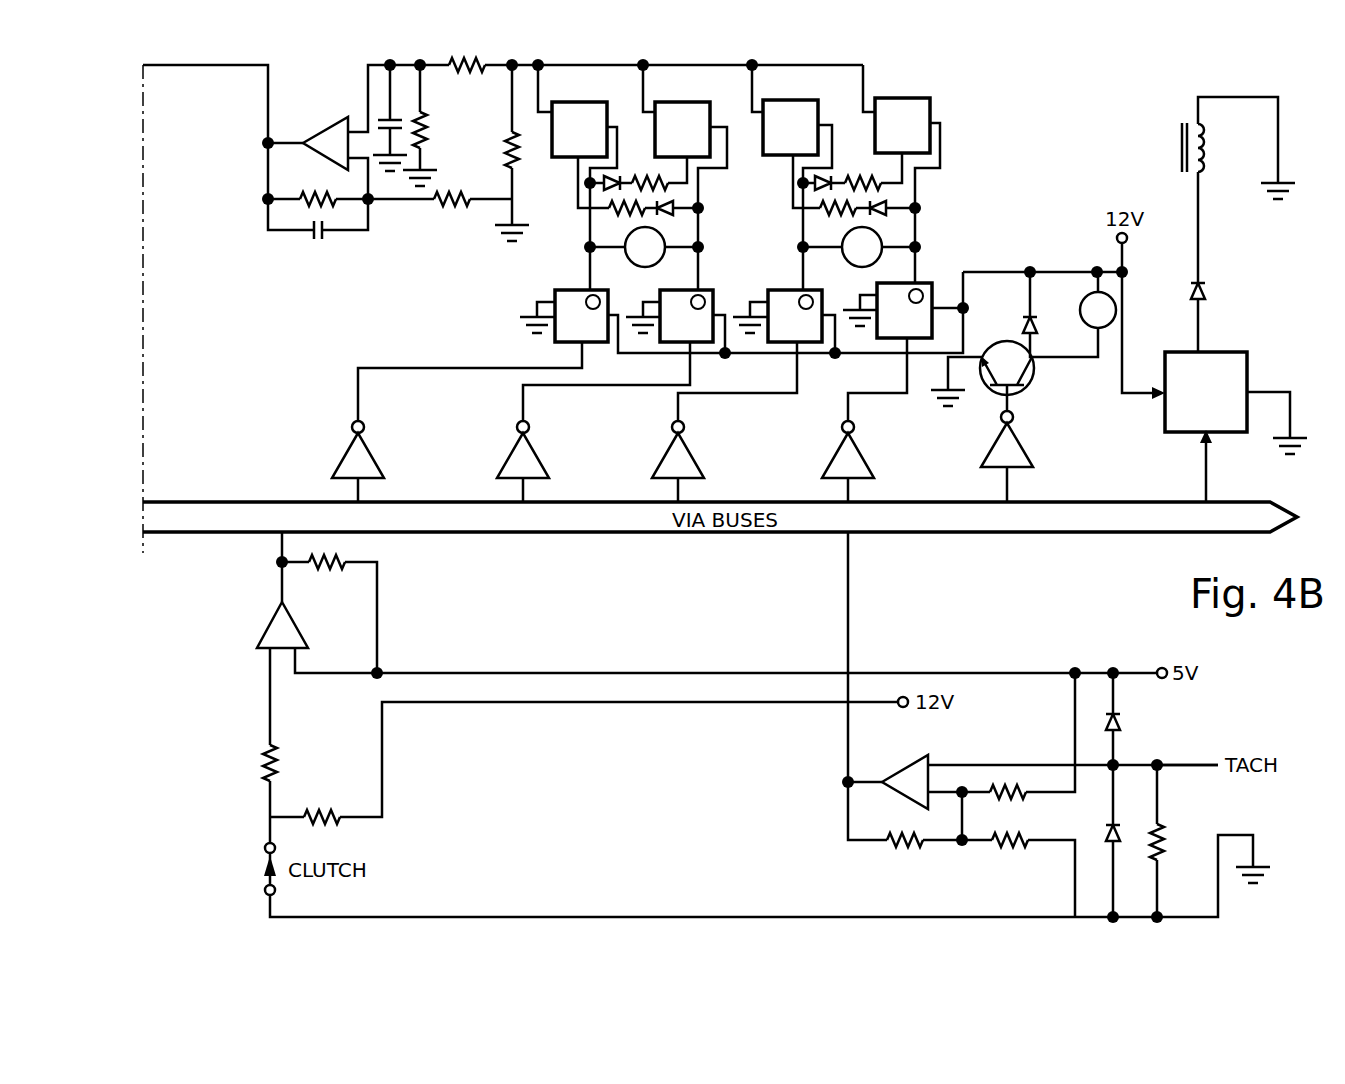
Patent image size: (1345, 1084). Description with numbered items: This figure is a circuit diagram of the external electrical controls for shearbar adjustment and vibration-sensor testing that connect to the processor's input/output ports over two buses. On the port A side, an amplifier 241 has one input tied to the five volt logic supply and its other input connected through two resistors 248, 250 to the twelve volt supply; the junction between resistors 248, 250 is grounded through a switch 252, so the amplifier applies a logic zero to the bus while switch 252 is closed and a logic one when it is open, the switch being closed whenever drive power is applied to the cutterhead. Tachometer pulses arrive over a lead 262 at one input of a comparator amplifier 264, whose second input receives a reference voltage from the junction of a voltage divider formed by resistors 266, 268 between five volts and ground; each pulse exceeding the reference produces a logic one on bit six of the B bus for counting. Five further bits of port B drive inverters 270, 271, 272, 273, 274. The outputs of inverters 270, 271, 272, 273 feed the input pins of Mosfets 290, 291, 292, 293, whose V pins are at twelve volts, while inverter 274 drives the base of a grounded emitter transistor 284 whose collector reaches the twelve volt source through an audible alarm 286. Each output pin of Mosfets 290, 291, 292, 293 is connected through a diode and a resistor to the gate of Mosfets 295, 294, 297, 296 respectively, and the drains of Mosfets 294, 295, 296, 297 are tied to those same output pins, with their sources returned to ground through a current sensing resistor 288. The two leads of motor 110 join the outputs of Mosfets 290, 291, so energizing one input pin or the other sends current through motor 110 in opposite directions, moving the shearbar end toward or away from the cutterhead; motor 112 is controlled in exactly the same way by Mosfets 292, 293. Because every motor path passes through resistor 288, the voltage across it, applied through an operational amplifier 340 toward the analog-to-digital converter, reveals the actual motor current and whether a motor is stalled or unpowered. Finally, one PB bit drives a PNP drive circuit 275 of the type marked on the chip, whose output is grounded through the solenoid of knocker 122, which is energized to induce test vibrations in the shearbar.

The operational amplifier 340 is at (340, 118).
The current sensing resistor 288 is at (512, 150).
The Mosfet 294 is at (607, 105).
The Mosfet 295 is at (707, 85).
The Mosfet 296 is at (817, 85).
The Mosfet 297 is at (927, 82).
The motor 110 is at (665, 242).
The motor 112 is at (882, 242).
The knocker 122 is at (1204, 152).
The Mosfet 290 is at (558, 329).
The Mosfet 291 is at (677, 295).
The Mosfet 292 is at (788, 295).
The Mosfet 293 is at (897, 292).
The audible alarm 286 is at (1080, 310).
The grounded emitter transistor 284 is at (1035, 381).
The PNP drive circuit 275 is at (1230, 350).
The inverter 270 is at (375, 455).
The inverter 271 is at (538, 452).
The inverter 272 is at (691, 455).
The inverter 273 is at (863, 453).
The inverter 274 is at (1025, 439).
The amplifier 241 is at (290, 630).
The resistor 248 is at (279, 765).
The resistor 250 is at (313, 809).
The switch 252 is at (262, 858).
The comparator amplifier 264 is at (905, 760).
The resistor 266 is at (1009, 797).
The resistor 268 is at (1002, 847).
The lead 262 is at (1193, 762).